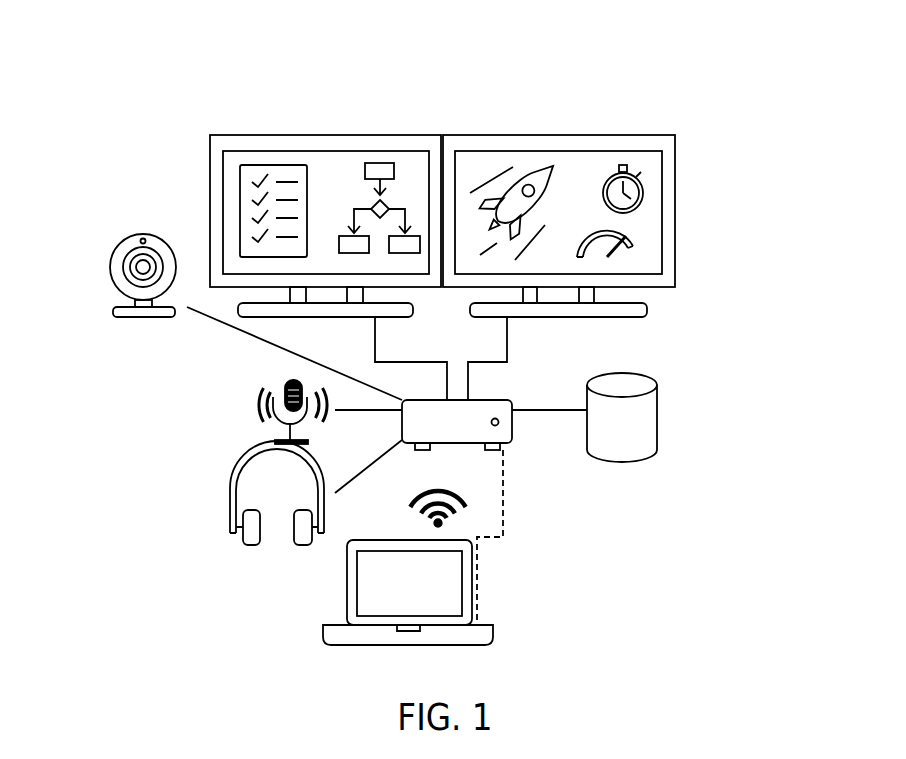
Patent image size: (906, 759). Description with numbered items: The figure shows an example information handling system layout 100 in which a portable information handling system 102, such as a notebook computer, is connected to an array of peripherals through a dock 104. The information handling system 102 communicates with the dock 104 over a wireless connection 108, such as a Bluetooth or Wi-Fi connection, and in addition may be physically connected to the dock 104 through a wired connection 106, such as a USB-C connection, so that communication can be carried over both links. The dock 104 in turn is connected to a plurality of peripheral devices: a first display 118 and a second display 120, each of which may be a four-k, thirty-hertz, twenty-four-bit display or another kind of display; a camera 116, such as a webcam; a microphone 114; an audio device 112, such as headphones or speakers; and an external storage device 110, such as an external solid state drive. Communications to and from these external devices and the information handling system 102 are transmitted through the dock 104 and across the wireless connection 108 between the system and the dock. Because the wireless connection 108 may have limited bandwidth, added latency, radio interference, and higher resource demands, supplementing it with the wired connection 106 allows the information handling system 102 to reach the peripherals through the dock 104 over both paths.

The information handling system layout 100 is at (688, 88).
The information handling system 102 is at (347, 590).
The dock 104 is at (500, 400).
The wired connection 106 is at (503, 515).
The wireless connection 108 is at (408, 500).
The external storage device 110 is at (657, 420).
The audio device 112 is at (232, 517).
The microphone 114 is at (252, 403).
The camera 116 is at (136, 236).
The first display 118 is at (675, 207).
The second display 120 is at (300, 135).